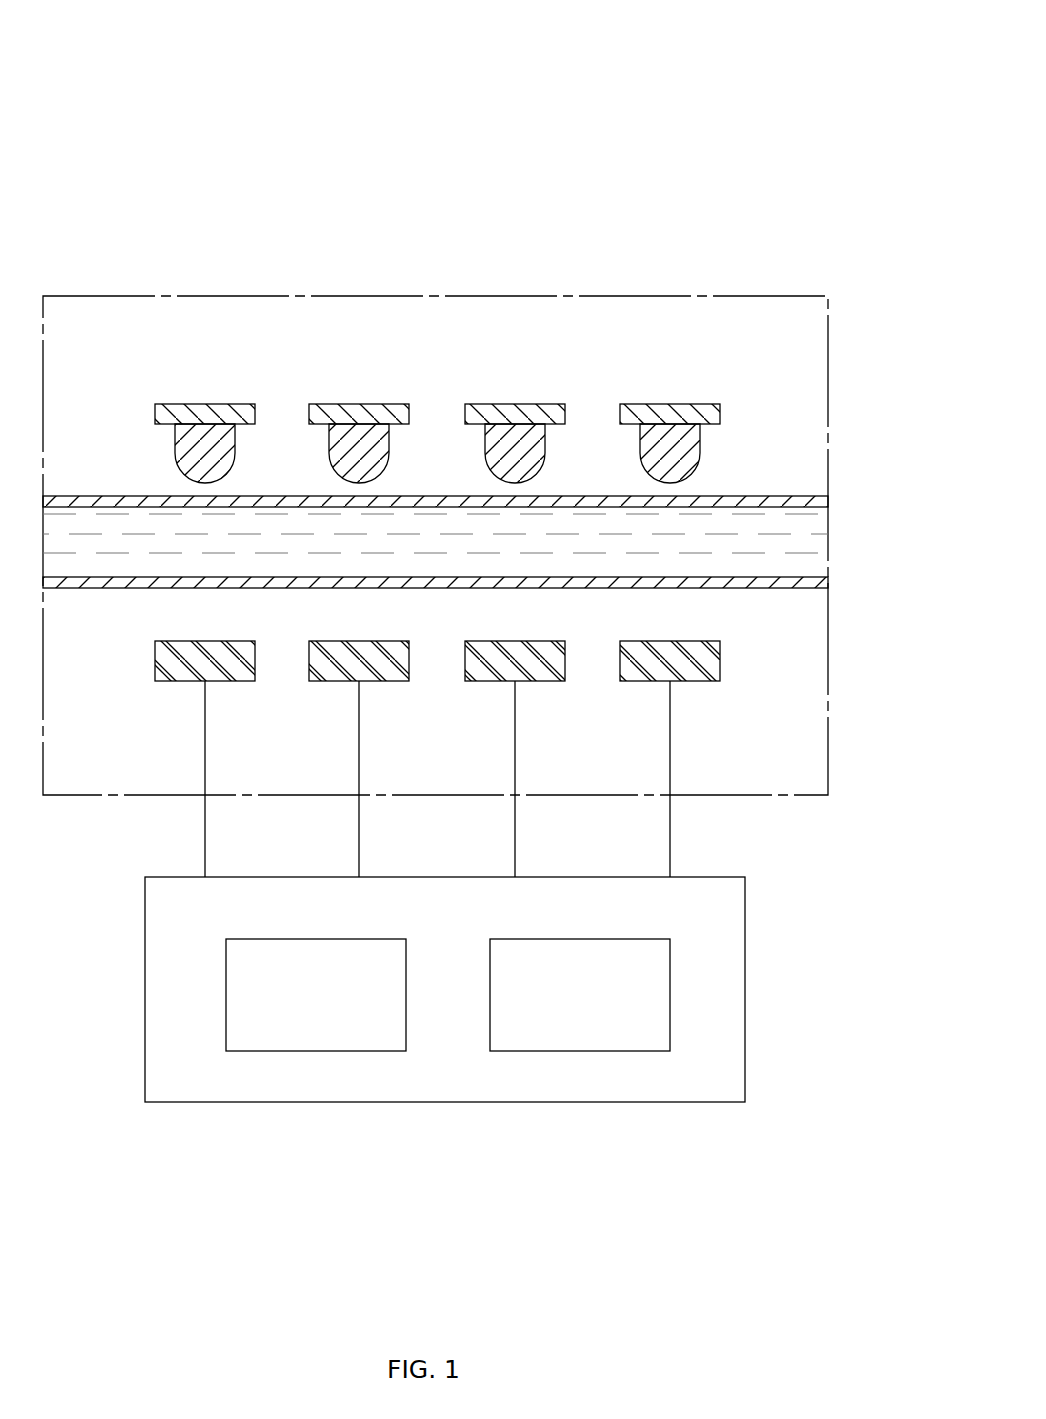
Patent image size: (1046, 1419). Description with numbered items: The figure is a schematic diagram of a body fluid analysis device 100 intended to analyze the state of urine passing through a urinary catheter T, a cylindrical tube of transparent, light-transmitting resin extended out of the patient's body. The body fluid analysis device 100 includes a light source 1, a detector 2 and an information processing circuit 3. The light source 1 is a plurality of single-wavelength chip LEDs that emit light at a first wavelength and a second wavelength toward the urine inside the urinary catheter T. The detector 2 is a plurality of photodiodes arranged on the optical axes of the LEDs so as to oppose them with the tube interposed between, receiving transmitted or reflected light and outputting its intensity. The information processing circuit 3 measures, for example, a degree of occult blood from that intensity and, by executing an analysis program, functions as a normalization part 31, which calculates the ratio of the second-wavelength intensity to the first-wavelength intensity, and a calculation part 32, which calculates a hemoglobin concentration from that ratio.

The body fluid analysis device 100 is at (624, 195).
The light source 1 is at (730, 400).
The detector 2 is at (730, 688).
The urinary catheter T is at (780, 497).
The information processing circuit 3 is at (745, 990).
The normalization part 31 is at (317, 1051).
The calculation part 32 is at (581, 1052).